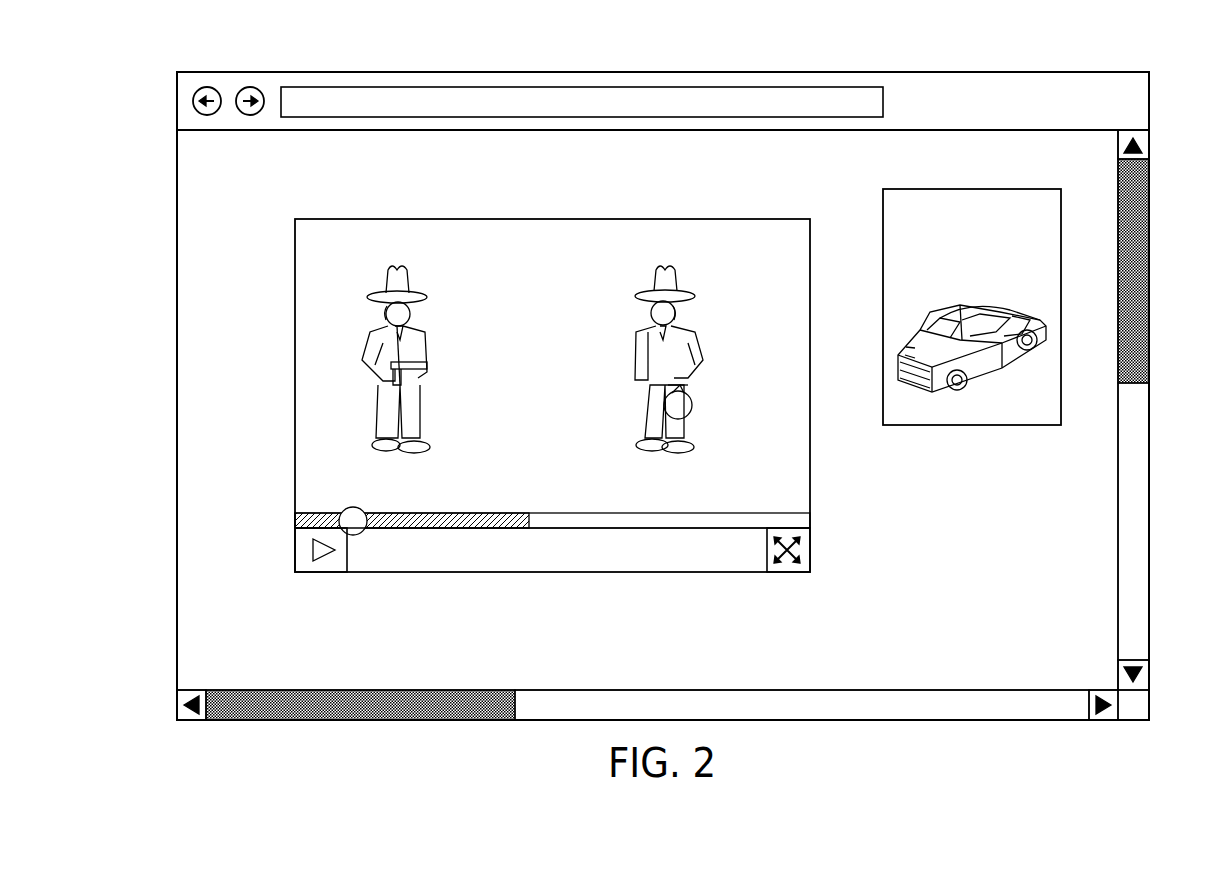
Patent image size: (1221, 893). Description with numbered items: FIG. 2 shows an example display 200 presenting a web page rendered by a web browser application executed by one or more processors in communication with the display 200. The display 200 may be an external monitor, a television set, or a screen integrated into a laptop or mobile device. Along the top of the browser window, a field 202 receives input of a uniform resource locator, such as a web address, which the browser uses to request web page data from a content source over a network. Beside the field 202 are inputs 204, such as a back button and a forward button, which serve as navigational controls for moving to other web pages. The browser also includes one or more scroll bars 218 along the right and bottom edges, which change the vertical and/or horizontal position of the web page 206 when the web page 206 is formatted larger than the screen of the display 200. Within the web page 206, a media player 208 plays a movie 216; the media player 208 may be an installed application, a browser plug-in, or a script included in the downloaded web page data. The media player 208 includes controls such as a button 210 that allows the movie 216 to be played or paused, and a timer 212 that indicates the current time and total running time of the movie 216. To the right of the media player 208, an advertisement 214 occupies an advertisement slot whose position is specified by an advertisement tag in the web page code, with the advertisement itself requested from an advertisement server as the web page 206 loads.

The display 200 is at (177, 237).
The field 202 is at (398, 87).
The inputs 204 is at (207, 87).
The web page 206 is at (200, 369).
The media player 208 is at (295, 240).
The button 210 is at (334, 574).
The timer 212 is at (456, 574).
The advertisement 214 is at (1047, 204).
The movie 216 is at (541, 278).
The scroll bars 218 is at (1150, 252).